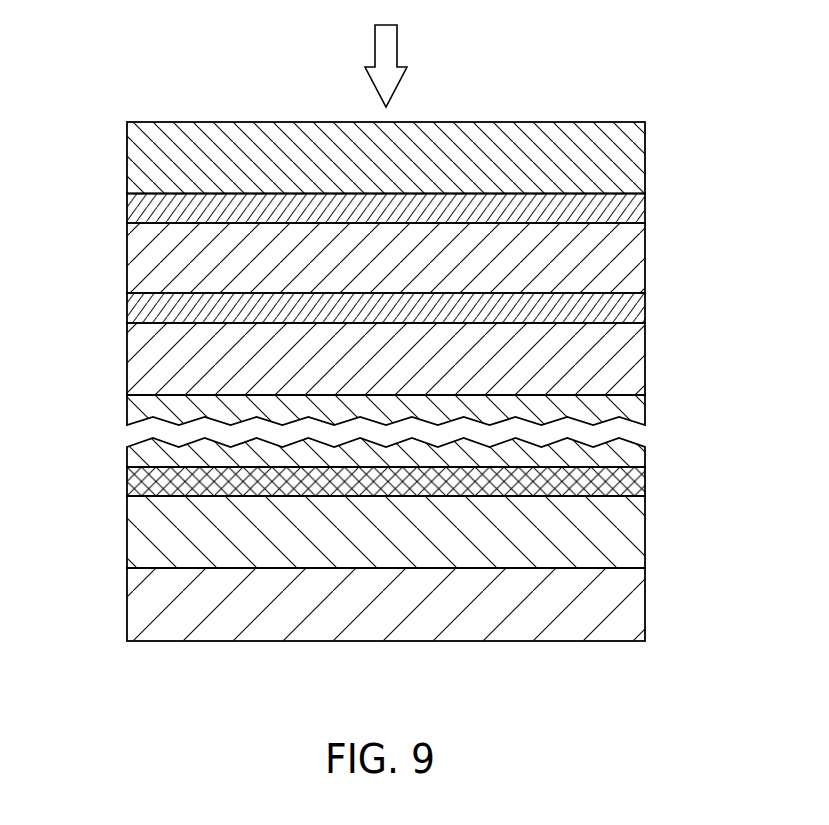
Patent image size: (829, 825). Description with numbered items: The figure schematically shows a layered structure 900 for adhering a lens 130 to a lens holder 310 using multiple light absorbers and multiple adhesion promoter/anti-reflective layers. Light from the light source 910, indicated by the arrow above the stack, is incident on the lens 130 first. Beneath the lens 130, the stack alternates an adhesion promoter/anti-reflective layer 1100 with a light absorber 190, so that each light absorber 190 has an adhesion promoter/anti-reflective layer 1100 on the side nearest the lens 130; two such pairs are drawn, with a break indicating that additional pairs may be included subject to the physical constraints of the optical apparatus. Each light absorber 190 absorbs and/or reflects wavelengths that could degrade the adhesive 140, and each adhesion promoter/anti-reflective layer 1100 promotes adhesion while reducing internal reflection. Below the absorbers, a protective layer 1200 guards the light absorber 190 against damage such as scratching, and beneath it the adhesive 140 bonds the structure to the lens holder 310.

The layered structure 900 is at (118, 122).
The light source 910 is at (397, 47).
The lens 130 is at (642, 153).
The adhesion promoter/anti-reflective layer 1100 is at (642, 210).
The light absorber 190 is at (642, 265).
The protective layer 1200 is at (642, 487).
The adhesive 140 is at (642, 532).
The lens holder 310 is at (642, 607).